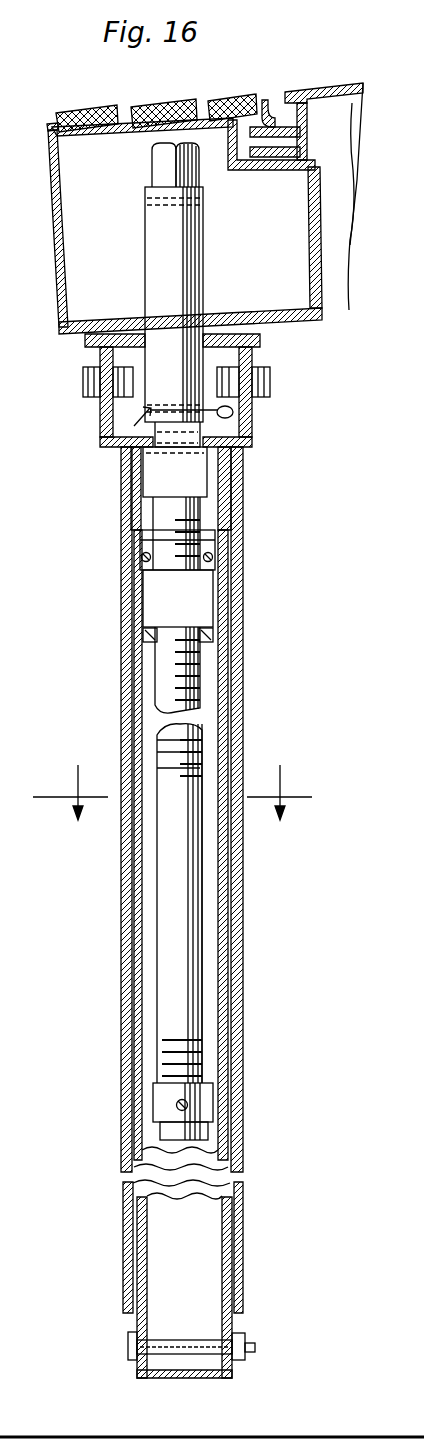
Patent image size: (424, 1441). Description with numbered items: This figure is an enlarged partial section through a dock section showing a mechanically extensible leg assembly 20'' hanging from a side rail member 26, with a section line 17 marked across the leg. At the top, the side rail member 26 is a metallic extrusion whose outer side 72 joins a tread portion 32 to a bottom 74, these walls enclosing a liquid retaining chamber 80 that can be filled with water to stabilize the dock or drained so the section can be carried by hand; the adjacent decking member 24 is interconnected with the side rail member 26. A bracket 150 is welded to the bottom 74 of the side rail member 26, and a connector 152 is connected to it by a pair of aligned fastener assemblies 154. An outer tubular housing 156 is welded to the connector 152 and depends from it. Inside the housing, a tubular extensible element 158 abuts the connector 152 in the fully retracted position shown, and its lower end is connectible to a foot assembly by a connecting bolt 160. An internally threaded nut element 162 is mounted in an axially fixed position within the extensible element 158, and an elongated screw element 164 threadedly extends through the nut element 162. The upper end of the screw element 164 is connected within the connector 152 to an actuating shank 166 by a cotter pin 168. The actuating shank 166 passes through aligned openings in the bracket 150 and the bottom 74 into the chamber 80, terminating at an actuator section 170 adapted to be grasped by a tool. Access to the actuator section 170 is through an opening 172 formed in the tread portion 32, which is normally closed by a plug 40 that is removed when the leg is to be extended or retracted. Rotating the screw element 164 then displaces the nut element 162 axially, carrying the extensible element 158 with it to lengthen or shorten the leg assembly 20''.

The leg assembly 20'' is at (62, 561).
The decking member 24 is at (11, 1148).
The side rail member 26 is at (44, 202).
The tread portion 32 is at (112, 130).
The plug 40 is at (152, 108).
The outer side 72 is at (55, 245).
The bottom 74 is at (108, 322).
The liquid retaining chamber 80 is at (268, 211).
The bracket 150 is at (257, 344).
The connector 152 is at (102, 437).
The fastener assemblies 154 is at (82, 380).
The outer tubular housing 156 is at (122, 562).
The tubular extensible element 158 is at (228, 664).
The connecting bolt 160 is at (195, 1345).
The internally threaded nut element 162 is at (200, 597).
The screw element 164 is at (187, 693).
The actuating shank 166 is at (188, 272).
The cotter pin 168 is at (232, 410).
The actuator section 170 is at (160, 176).
The opening 172 is at (180, 107).
The section line 17- 17 is at (172, 810).